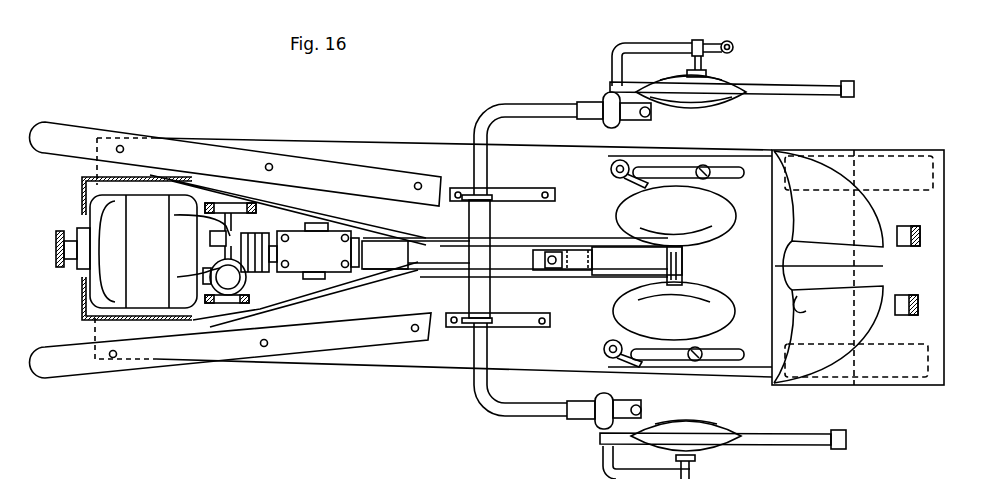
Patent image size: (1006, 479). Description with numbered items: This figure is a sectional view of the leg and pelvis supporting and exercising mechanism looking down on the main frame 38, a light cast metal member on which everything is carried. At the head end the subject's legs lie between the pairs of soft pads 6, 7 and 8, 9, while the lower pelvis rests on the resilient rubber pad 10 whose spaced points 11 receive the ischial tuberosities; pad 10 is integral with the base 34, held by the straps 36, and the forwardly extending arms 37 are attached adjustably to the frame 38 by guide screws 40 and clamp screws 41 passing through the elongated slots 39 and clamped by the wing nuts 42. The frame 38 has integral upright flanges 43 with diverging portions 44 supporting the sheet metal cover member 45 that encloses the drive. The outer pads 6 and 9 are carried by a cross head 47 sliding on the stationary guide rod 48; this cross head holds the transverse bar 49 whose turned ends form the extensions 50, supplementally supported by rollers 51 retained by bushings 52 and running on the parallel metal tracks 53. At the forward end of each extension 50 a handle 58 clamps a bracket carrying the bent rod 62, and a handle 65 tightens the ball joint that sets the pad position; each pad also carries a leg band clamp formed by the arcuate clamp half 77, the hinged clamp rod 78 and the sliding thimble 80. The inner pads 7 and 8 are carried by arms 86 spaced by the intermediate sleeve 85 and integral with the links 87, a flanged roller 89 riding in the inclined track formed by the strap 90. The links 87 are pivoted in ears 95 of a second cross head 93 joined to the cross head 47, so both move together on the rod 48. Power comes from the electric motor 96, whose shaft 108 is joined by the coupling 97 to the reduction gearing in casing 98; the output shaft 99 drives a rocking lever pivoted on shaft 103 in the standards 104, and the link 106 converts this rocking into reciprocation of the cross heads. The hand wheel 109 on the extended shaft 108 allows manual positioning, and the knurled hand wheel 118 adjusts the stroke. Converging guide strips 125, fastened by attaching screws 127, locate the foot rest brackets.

The pad 6 is at (736, 77).
The pad 7 is at (733, 218).
The pad 8 is at (726, 310).
The pad 9 is at (733, 433).
The pad 10 is at (840, 227).
The spaced points 11 is at (818, 306).
The base portion 34 is at (941, 162).
The straps 36 is at (918, 302).
The arms 37 is at (756, 167).
The main frame 38 is at (428, 380).
The elongated slots 39 is at (728, 172).
The guide screws 40 is at (705, 167).
The clamp screws 41 is at (649, 159).
The wing nuts 42 is at (626, 156).
The upright flanges 43 is at (533, 241).
The diverging portions 44 is at (315, 205).
The cover member 45 is at (82, 318).
The cross head 47 is at (468, 219).
The guide rod 48 is at (413, 240).
The bar 49 is at (474, 133).
The extensions 50 is at (523, 105).
The rollers 51 is at (487, 190).
The bushings 52 is at (474, 172).
The metal tracks 53 is at (526, 195).
The handle 58 is at (650, 117).
The bent rod 62 is at (641, 49).
The handle 65 is at (736, 45).
The arcuate clamp half 77 is at (795, 85).
The clamp rod 78 is at (813, 95).
The thimble 80 is at (854, 90).
The intermediate sleeve 85 is at (682, 272).
The arms 86 is at (613, 236).
The links 87 is at (538, 241).
The flanged roller 89 is at (590, 292).
The strap 90 is at (636, 297).
The cross head 93 is at (418, 279).
The ears 95 is at (392, 285).
The electric motor 96 is at (160, 248).
The coupling 97 is at (251, 236).
The casing 98 is at (296, 251).
The output shaft 99 is at (323, 285).
The shaft 103 is at (256, 205).
The standards 104 is at (246, 303).
The link 106 is at (297, 295).
The motor shaft 108 is at (188, 221).
The hand wheel 109 is at (56, 259).
The knurled hand wheel 118 is at (184, 274).
The guide strip 125 is at (226, 156).
The attaching screws 127 is at (272, 162).